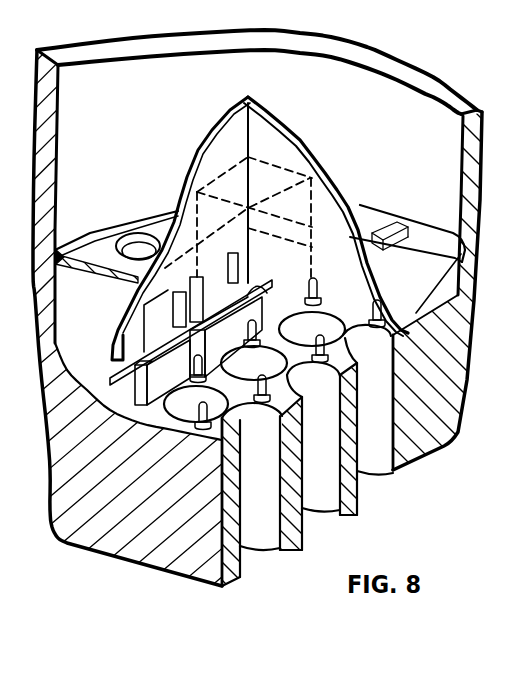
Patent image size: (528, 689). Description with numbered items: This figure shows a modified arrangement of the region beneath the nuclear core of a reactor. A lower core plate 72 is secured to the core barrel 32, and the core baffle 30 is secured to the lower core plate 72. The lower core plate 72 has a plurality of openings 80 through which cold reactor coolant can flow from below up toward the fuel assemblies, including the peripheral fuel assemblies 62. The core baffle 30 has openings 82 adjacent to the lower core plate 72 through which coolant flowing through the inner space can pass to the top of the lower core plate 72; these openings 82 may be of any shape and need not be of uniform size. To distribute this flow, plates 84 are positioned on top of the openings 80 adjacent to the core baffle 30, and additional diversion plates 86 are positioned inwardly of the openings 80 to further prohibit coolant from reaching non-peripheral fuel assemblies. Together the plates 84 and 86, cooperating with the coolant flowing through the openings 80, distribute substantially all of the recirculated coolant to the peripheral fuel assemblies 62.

The core baffle 30 is at (291, 130).
The core barrel 32 is at (185, 37).
The peripheral fuel assemblies 62 is at (305, 162).
The lower core plate 72 is at (157, 557).
The openings 80 is at (322, 306).
The openings 82 is at (199, 287).
The plates 84 is at (181, 336).
The diversion plates 86 is at (238, 312).